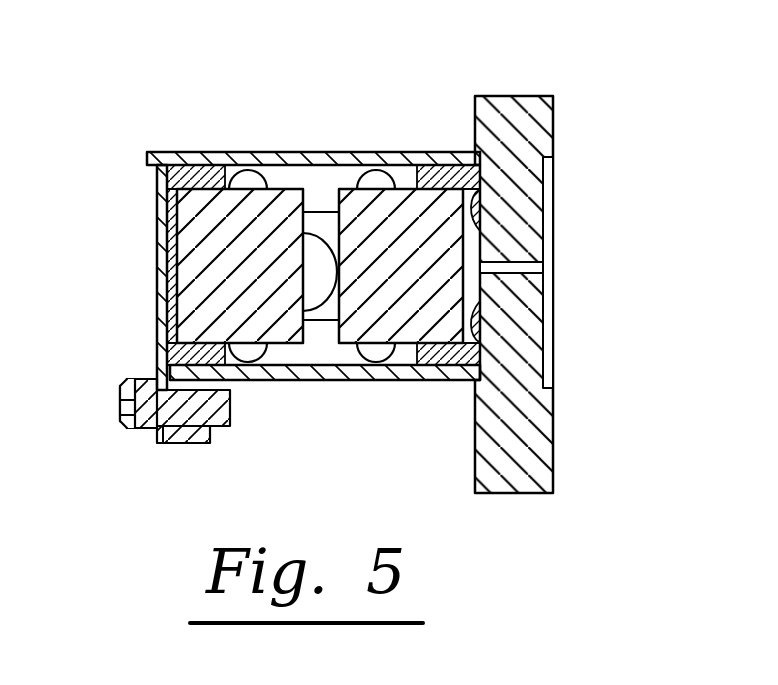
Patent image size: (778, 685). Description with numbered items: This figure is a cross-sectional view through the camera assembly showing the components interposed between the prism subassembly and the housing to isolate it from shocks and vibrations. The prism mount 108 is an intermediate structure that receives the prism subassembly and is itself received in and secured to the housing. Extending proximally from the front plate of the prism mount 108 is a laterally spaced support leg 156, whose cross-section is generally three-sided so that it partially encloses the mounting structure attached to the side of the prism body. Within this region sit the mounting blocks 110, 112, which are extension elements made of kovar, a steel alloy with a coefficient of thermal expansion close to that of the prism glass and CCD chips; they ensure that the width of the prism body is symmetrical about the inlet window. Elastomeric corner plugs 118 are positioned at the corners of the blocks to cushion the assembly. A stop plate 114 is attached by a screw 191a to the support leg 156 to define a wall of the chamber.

The prism mount 108 is at (543, 102).
The mounting block 110 is at (247, 212).
The mounting block 112 is at (363, 213).
The stop plate 114 is at (157, 257).
The elastomeric corner plugs 118 is at (177, 153).
The support leg 156 is at (373, 153).
The screw 191a is at (131, 432).